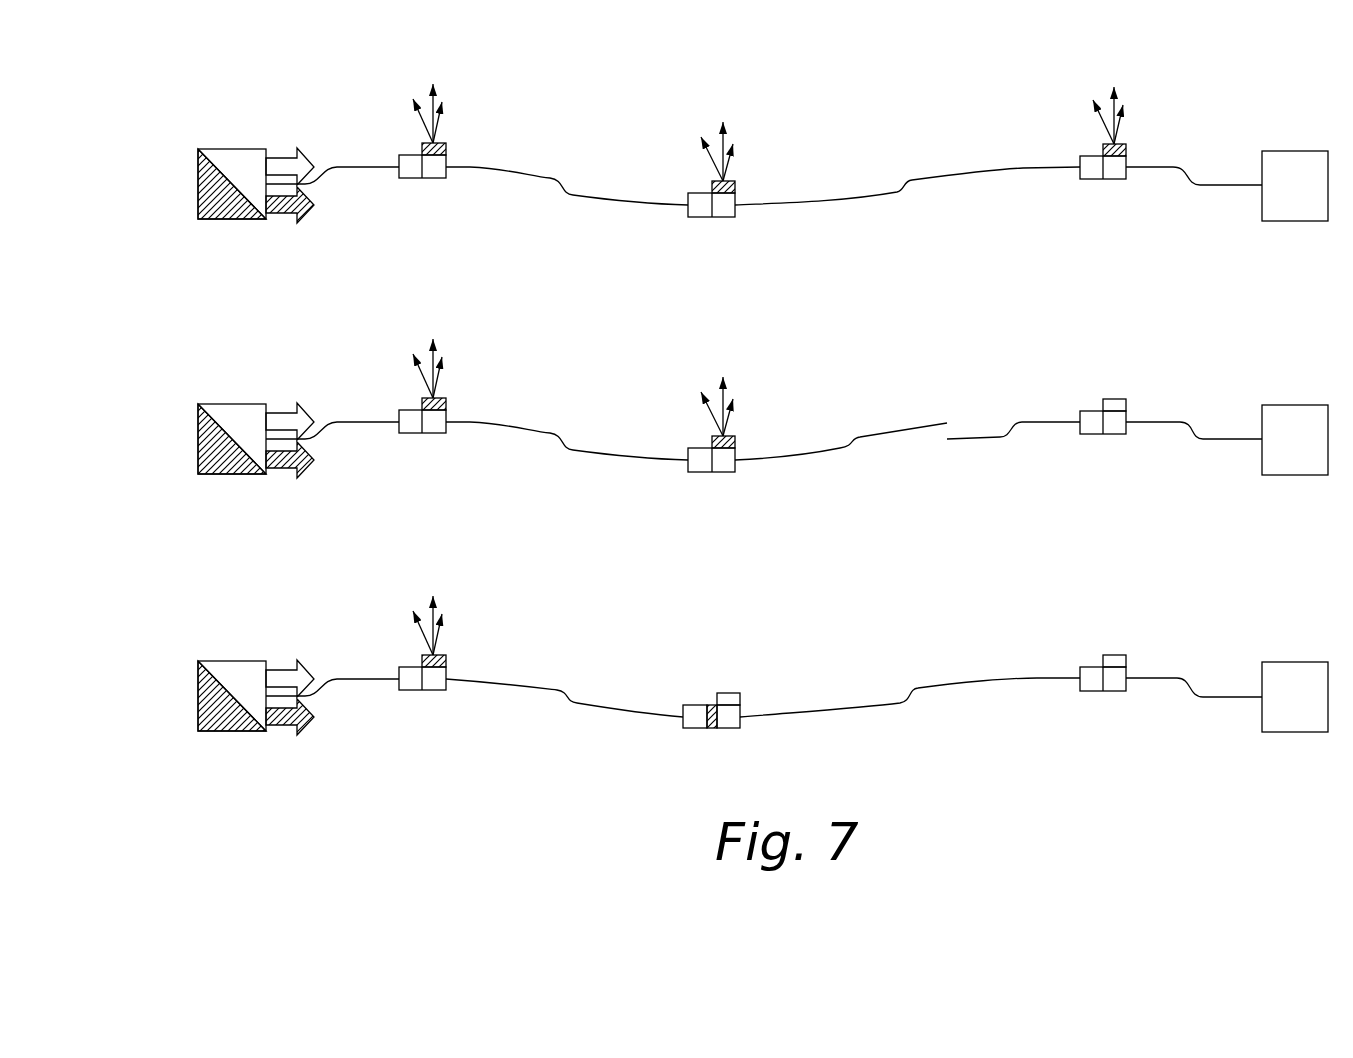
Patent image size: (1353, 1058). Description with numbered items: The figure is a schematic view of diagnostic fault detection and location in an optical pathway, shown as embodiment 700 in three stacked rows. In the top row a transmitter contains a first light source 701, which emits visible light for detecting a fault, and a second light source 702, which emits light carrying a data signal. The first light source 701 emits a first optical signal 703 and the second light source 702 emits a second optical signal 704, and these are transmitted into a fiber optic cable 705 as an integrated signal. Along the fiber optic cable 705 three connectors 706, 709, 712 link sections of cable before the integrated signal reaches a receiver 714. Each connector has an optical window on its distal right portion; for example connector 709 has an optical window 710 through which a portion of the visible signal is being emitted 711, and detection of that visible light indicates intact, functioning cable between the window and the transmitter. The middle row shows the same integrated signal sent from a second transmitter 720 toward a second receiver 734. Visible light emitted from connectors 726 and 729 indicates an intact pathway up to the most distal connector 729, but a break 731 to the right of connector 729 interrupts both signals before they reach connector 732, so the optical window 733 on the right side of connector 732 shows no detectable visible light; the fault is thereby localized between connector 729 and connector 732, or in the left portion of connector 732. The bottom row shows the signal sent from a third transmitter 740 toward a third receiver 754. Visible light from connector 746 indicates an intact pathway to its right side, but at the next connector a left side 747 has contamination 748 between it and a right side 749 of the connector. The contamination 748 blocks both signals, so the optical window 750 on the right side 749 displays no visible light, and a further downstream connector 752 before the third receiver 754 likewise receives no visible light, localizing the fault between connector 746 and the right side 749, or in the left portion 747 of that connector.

The embodiment 700 is at (240, 72).
The first light source 701 is at (232, 219).
The second light source 702 is at (230, 149).
The first optical signal 703 is at (284, 213).
The second optical signal 704 is at (285, 158).
The fiber optic cable 705 is at (373, 167).
The connector 706 is at (434, 202).
The connector 709 is at (724, 238).
The optical window 710 is at (750, 181).
The emitted visible light 711 is at (745, 128).
The connector 712 is at (1116, 201).
The receiver 714 is at (1297, 151).
The second transmitter 720 is at (192, 403).
The connector 726 is at (436, 455).
The connector 729 is at (724, 493).
The break 731 is at (932, 440).
The connector 732 is at (1116, 456).
The optical window 733 is at (1113, 399).
The second receiver 734 is at (1297, 405).
The third transmitter 740 is at (192, 660).
The connector 746 is at (436, 711).
The left side of connector 747 is at (698, 704).
The contamination 748 is at (715, 729).
The right side of connector 749 is at (728, 729).
The optical window 750 is at (742, 708).
The third sensor node 752 is at (1116, 712).
The third receiver 754 is at (1297, 662).